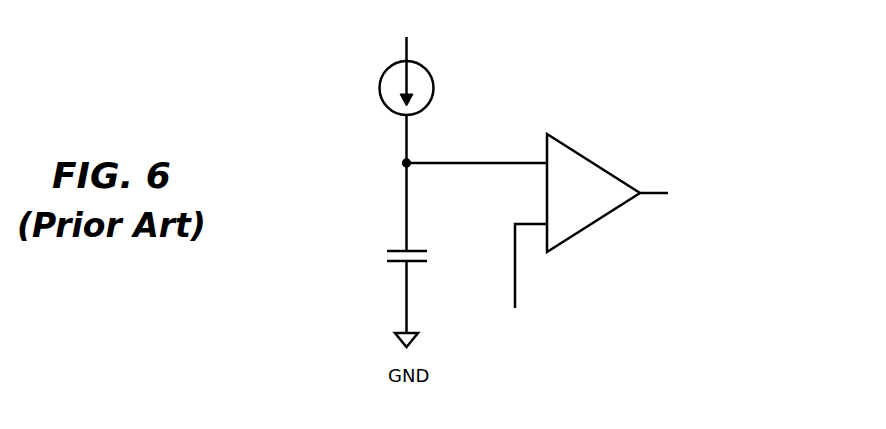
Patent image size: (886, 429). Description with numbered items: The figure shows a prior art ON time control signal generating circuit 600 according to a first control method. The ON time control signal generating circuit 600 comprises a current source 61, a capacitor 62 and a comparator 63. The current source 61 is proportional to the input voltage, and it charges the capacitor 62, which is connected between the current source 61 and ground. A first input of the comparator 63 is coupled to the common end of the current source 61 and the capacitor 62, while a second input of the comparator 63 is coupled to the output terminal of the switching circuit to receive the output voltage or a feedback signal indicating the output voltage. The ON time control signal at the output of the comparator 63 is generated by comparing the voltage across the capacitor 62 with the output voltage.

The ON time control signal generating circuit 600 is at (728, 88).
The current source 61 is at (443, 85).
The capacitor 62 is at (380, 258).
The comparator 63 is at (603, 168).